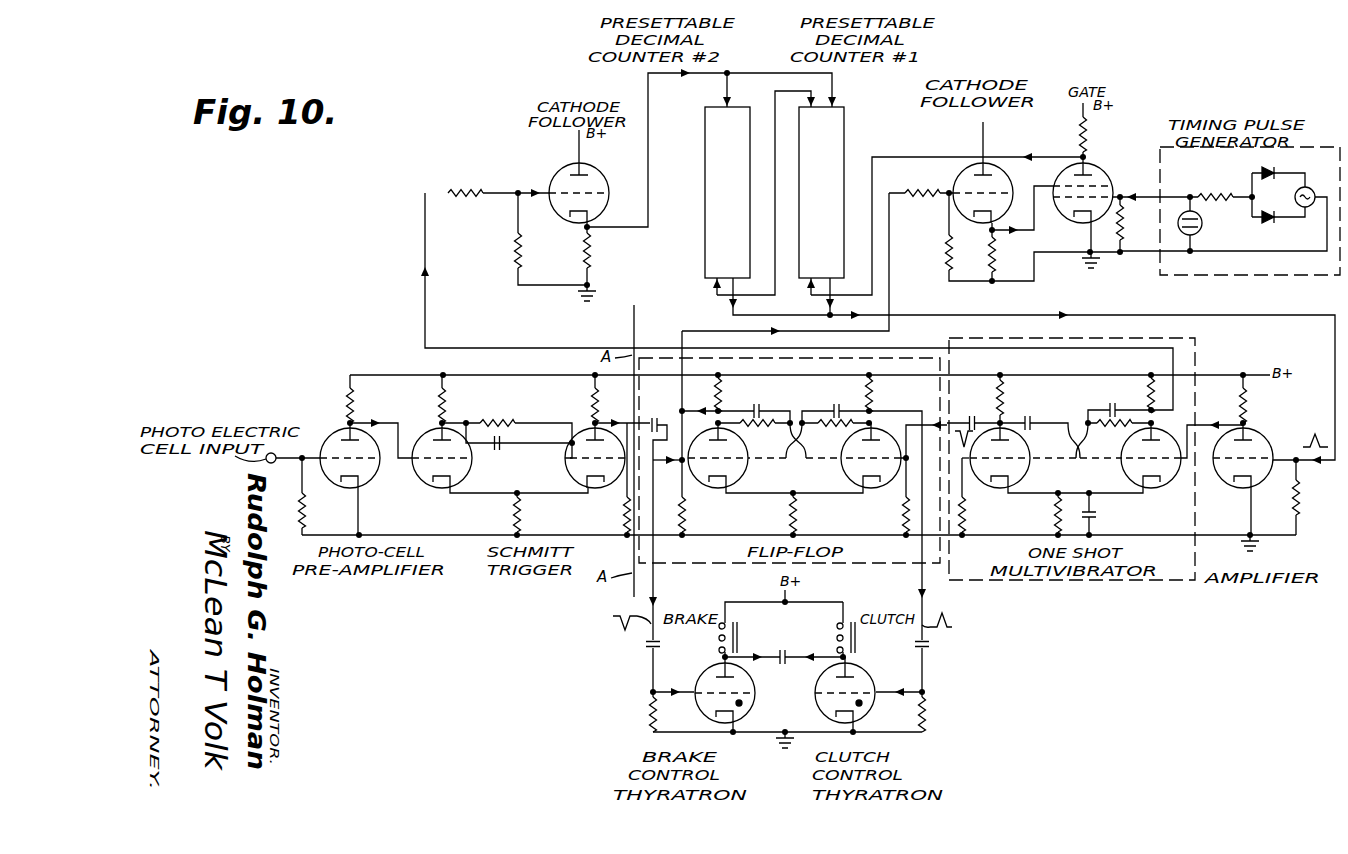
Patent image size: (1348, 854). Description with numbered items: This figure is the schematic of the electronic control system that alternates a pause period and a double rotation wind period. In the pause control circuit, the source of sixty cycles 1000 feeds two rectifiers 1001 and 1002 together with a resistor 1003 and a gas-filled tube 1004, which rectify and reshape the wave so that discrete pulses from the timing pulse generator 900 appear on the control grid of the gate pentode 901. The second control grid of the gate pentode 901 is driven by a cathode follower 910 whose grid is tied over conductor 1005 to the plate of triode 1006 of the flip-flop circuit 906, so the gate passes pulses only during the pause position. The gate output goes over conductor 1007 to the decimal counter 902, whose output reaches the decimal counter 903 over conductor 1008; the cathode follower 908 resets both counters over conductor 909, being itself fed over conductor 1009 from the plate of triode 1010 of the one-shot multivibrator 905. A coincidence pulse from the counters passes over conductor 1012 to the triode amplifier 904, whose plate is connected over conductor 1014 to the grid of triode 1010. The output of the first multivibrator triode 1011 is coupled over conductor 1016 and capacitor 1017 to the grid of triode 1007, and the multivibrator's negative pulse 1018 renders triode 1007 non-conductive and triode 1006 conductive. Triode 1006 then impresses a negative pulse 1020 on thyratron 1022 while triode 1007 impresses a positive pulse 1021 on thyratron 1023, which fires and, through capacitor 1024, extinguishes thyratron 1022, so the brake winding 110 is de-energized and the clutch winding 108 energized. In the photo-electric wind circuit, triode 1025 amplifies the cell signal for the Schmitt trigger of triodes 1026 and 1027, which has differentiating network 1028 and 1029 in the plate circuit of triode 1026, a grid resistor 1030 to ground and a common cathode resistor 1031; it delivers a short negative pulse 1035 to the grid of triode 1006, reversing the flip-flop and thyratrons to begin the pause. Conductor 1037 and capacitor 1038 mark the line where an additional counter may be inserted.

The pause pulse generator 900 is at (1230, 226).
The gate pentode 901 is at (1100, 165).
The decimal counter 902 is at (848, 131).
The decimal counter 903 is at (705, 258).
The triode amplifier 904 is at (1262, 430).
The one-shot multivibrator 905 is at (1200, 349).
The flip-flop circuit 906 is at (903, 560).
The cathode follower 908 is at (552, 170).
The conductor 909 is at (650, 102).
The cathode follower 910 is at (953, 183).
The source of 60 cycles 1000 is at (1310, 188).
The rectifier 1001 is at (1262, 170).
The rectifier 1002 is at (1270, 222).
The resistor 1003 is at (1226, 192).
The gas-filled tube 1004 is at (1202, 229).
The conductor 1005 is at (890, 306).
The triode 1006 is at (705, 493).
The triode 1007 is at (886, 488).
The conductor 1008 is at (773, 113).
The conductor 1009 is at (900, 348).
The triode 1010 is at (1163, 490).
The triode 1011 is at (992, 492).
The conductor 1012 is at (1083, 315).
The conductor 1014 is at (1223, 420).
The conductor 1016 is at (1005, 422).
The capacitor 1017 is at (1003, 398).
The negative pulse 1018 is at (968, 420).
The negative pulse 1020 is at (610, 620).
The positive pulse 1021 is at (948, 624).
The thyratron 1022 is at (702, 668).
The thyratron 1023 is at (874, 677).
The capacitor 1024 is at (792, 634).
The triode 1025 is at (332, 433).
The triode 1026 is at (428, 483).
The triode 1027 is at (593, 493).
The differentiating network resistor 1028 is at (507, 422).
The differentiating network capacitor 1029 is at (495, 446).
The resistor 1030 is at (623, 518).
The common cathode resistor 1031 is at (510, 517).
The short negative pulse 1035 is at (658, 417).
The conductor 1037 is at (590, 417).
The capacitor 1038 is at (641, 418).
The clutch winding 108 is at (853, 622).
The brake winding 110 is at (735, 619).